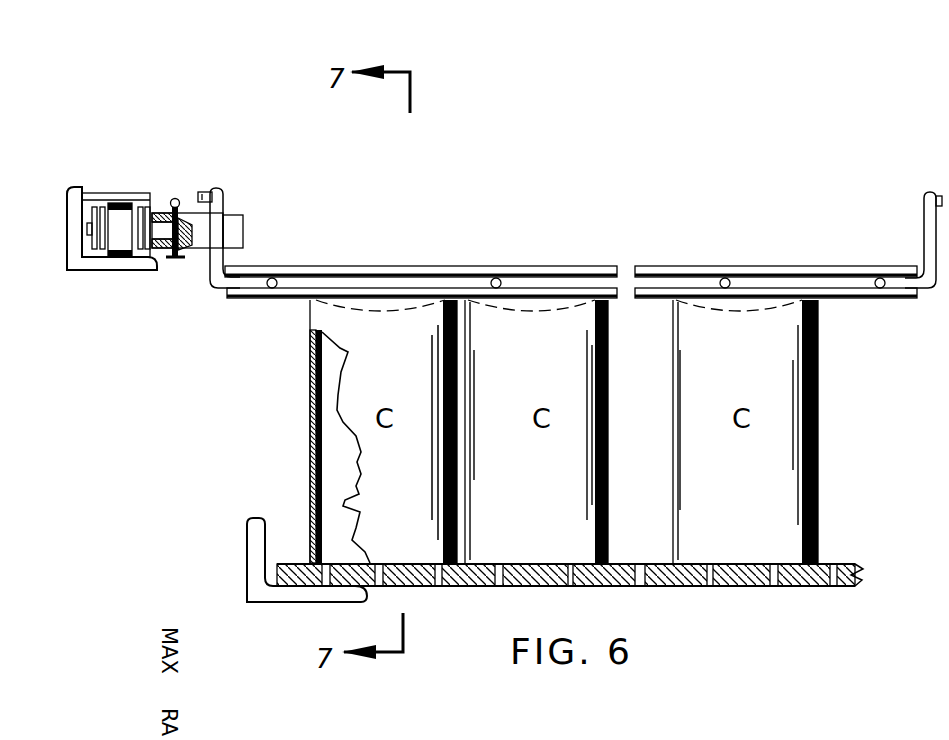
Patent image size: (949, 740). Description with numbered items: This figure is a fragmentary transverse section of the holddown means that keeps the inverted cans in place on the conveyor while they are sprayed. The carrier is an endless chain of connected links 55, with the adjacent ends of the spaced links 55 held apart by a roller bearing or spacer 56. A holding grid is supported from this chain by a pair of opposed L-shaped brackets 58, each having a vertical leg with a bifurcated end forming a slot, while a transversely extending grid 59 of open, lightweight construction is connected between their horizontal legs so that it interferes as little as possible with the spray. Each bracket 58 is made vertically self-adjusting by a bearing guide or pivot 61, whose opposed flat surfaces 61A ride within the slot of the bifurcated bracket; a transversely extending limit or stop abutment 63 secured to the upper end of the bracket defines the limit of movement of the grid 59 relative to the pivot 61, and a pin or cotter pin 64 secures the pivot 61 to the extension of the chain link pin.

The links 55 is at (96, 212).
The roller bearing or spacer 56 is at (120, 204).
The L-shaped brackets 58 is at (224, 203).
The grid 59 is at (650, 267).
The bearing guide or pivot 61 is at (200, 252).
The opposed flat surfaces 61A is at (245, 228).
The limit or stop abutment 63 is at (201, 192).
The pin or cotter pin 64 is at (174, 199).